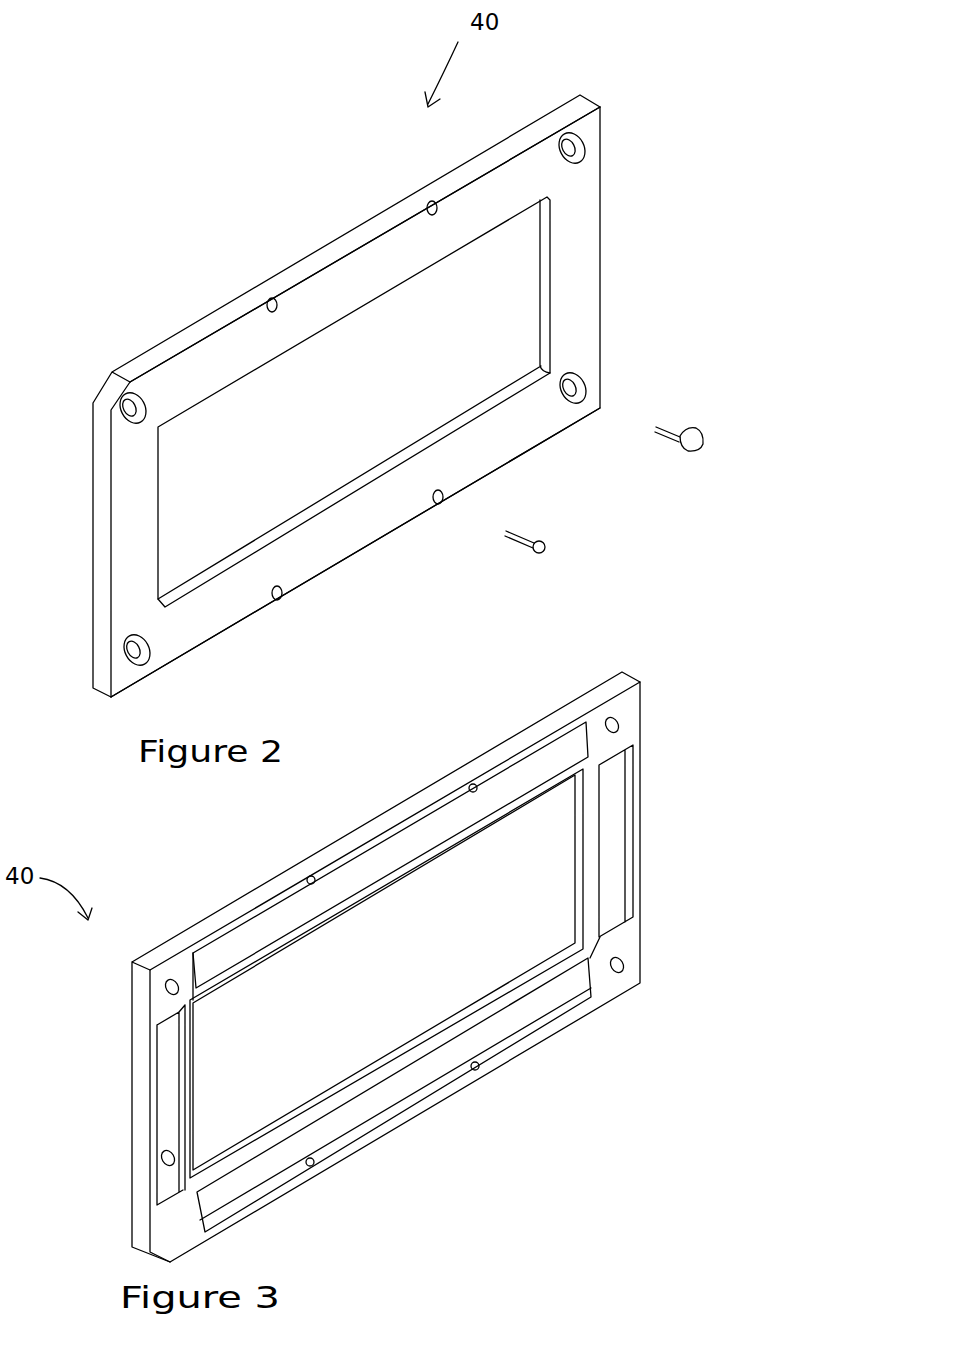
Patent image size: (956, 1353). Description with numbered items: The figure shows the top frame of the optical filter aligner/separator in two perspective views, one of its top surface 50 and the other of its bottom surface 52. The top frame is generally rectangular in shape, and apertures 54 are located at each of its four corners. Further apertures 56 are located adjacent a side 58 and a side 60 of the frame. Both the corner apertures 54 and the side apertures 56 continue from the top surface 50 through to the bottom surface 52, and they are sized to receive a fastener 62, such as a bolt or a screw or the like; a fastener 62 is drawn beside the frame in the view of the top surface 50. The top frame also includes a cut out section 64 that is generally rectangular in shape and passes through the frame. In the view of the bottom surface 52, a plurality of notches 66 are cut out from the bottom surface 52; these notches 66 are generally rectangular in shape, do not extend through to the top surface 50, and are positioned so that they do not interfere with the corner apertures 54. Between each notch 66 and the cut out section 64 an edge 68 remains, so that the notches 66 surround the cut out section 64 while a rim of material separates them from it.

In FIG. 2, the top surface 50 is at (580, 225).
In FIG. 3, the bottom surface 52 is at (625, 752).
In FIG. 2, the apertures 54 is at (130, 402).
In FIG. 3, the apertures 54 is at (177, 983).
In FIG. 2, the apertures 56 is at (276, 298).
In FIG. 3, the apertures 56 is at (312, 877).
In FIG. 2, the side 58 is at (360, 240).
In FIG. 2, the side 60 is at (352, 560).
In FIG. 2, the fastener 62 is at (547, 548).
In FIG. 2, the cut out section 64 is at (463, 338).
In FIG. 3, the cut out section 64 is at (505, 885).
In FIG. 3, the notches 66 is at (375, 860).
In FIG. 3, the edge 68 is at (413, 887).